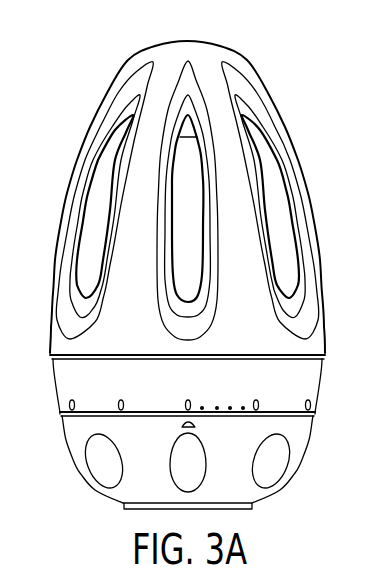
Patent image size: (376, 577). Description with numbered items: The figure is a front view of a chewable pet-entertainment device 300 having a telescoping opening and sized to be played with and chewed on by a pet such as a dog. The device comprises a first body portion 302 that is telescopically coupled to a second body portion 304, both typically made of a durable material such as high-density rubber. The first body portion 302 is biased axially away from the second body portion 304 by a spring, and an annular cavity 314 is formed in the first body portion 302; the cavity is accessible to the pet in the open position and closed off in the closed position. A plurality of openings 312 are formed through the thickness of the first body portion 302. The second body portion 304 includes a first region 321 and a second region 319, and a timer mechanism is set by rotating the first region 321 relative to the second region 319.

The chewable pet-entertainment device 300 is at (306, 66).
The first body portion 302 is at (303, 183).
The openings 312 is at (88, 250).
The annular cavity 314 is at (295, 270).
The second region 319 is at (315, 375).
The second body portion 304 is at (62, 419).
The first region 321 is at (305, 440).